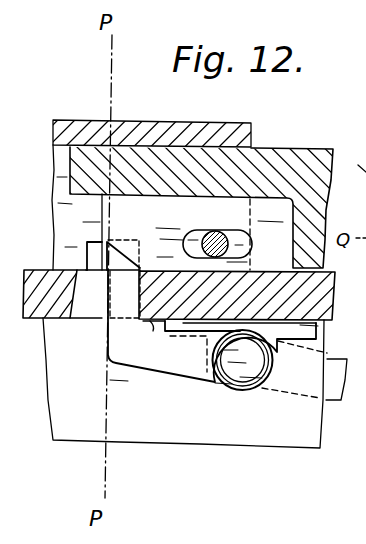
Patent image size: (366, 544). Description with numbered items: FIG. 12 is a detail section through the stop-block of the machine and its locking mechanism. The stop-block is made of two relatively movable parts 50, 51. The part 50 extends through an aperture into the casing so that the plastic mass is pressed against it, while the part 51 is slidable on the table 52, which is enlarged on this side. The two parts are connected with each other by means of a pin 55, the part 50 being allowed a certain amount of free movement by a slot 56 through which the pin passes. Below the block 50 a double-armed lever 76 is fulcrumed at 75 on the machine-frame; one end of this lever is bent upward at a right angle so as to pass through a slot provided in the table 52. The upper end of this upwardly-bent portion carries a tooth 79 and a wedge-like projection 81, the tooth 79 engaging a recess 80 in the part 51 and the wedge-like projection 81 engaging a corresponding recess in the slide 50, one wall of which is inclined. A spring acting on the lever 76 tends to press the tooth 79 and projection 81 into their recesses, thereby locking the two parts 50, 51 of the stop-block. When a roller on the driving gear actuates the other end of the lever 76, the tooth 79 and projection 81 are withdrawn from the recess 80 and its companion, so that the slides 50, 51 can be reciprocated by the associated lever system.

The part of the stop-block 50 is at (288, 148).
The part of the stop-block 51 is at (176, 113).
The table 52 is at (35, 313).
The pin 55 is at (220, 232).
The slot 56 is at (198, 230).
The fulcrum 75 is at (234, 372).
The double-armed lever 76 is at (122, 362).
The tooth 79 is at (119, 241).
The recess 80 is at (140, 239).
The wedge-like projection 81 is at (127, 258).